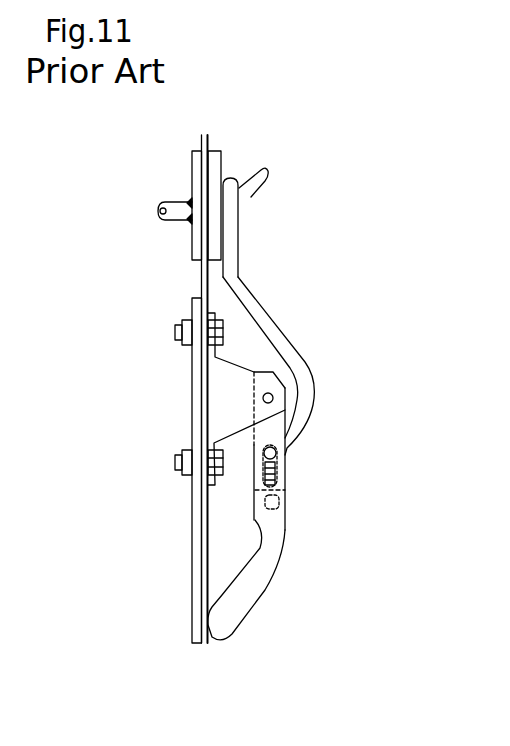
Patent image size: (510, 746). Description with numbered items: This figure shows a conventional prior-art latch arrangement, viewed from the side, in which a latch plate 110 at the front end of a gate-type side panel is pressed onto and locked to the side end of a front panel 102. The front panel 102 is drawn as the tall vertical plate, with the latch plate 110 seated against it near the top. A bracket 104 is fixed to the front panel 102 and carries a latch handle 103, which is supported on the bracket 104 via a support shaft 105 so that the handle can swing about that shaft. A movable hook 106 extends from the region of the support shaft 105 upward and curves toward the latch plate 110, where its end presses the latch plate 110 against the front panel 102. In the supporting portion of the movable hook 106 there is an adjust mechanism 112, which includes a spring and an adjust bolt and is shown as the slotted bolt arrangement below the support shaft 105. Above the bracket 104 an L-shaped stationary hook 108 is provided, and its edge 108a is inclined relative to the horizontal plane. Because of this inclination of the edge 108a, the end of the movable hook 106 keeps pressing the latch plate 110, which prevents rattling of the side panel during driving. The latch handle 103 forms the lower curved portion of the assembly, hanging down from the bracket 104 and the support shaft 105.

The front panel 102 is at (204, 520).
The latch handle 103 is at (255, 590).
The bracket 104 is at (233, 404).
The support shaft 105 is at (273, 398).
The movable hook 106 is at (272, 342).
The stationary hook 108 is at (248, 195).
The edge 108a is at (252, 175).
The latch plate 110 is at (222, 163).
The adjust mechanism 112 is at (277, 473).